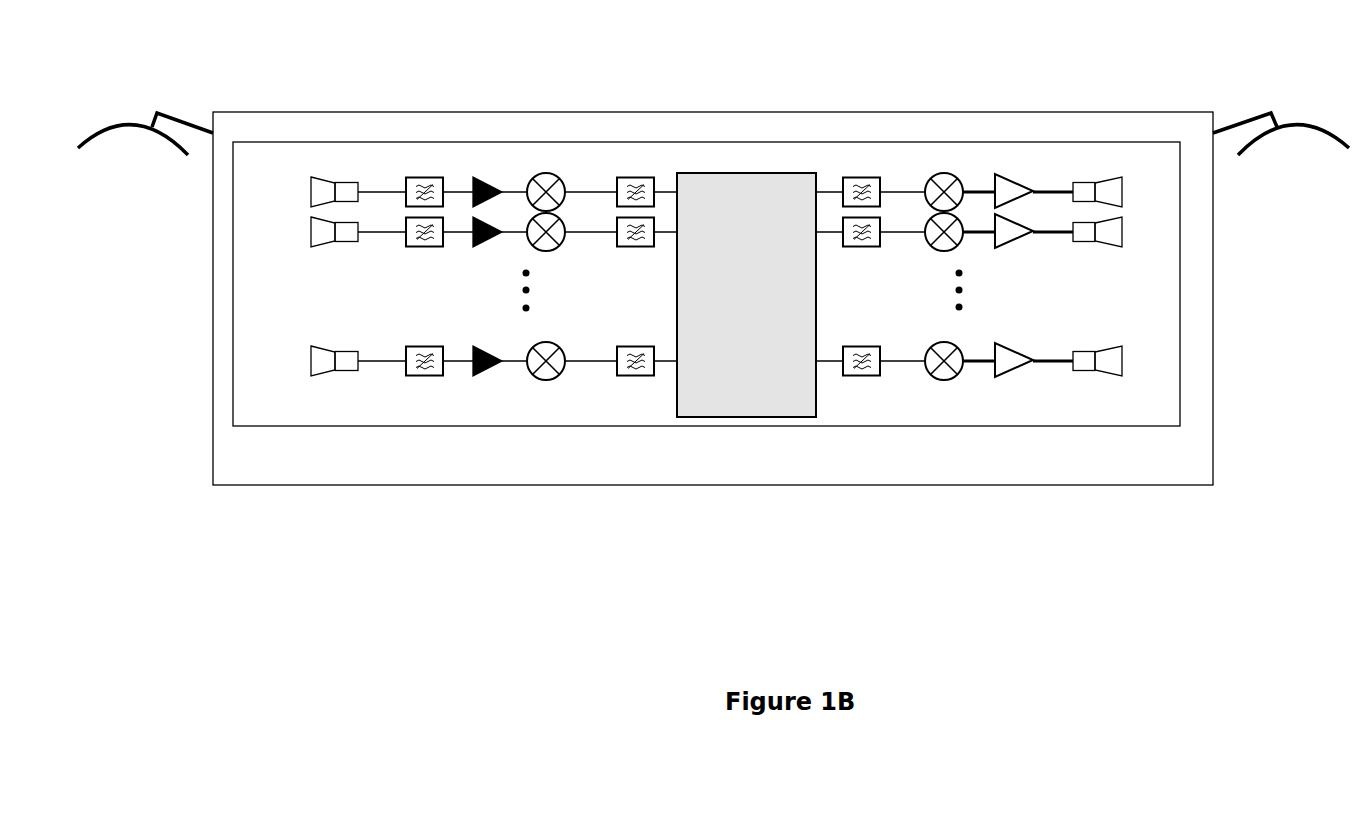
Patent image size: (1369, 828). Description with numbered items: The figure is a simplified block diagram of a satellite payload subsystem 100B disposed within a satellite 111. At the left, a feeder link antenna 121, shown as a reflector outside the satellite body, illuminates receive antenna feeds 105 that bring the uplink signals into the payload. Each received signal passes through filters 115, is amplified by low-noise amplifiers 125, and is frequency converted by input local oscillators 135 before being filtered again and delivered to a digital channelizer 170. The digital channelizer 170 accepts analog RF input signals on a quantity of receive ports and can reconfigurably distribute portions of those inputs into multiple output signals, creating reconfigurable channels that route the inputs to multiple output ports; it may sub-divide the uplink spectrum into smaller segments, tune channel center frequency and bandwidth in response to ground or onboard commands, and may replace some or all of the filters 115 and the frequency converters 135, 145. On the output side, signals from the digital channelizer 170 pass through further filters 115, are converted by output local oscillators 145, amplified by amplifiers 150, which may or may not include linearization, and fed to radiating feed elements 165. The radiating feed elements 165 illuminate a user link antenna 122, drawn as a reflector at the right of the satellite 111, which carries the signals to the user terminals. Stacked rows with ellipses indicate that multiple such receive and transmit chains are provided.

The satellite payload subsystem 100B is at (525, 142).
The receive antenna feeds 105 is at (335, 250).
The satellite 111 is at (713, 298).
The filters 115 is at (421, 250).
The feeder link antenna 121 is at (102, 128).
The user link antenna 122 is at (1297, 125).
The low-noise amplifiers 125 is at (484, 250).
The input local oscillators 135 is at (550, 252).
The output local oscillators 145 is at (935, 252).
The amplifiers 150 is at (1010, 250).
The radiating feed elements 165 is at (1100, 250).
The digital channelizer 170 is at (746, 295).